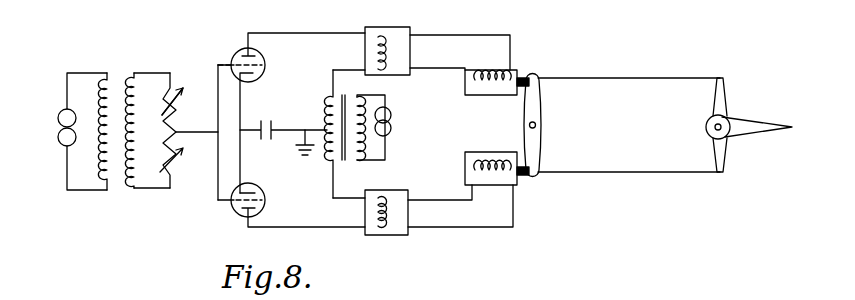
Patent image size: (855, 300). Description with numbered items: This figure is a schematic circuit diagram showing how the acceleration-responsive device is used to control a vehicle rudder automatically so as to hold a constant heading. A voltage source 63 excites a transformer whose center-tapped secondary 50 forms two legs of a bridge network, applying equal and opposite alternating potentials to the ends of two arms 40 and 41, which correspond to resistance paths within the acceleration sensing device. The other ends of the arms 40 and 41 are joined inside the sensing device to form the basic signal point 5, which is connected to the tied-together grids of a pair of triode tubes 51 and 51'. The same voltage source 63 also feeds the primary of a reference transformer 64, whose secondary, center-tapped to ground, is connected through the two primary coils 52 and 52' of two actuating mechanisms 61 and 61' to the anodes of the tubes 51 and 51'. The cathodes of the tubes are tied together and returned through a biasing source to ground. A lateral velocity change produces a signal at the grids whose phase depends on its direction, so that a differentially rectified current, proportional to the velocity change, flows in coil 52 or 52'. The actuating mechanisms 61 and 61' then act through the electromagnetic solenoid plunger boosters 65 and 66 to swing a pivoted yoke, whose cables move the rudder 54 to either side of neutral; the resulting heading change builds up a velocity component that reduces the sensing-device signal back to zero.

The voltage source 63 is at (70, 109).
The transformer secondary 50 is at (144, 97).
The bridge arm 40 is at (175, 82).
The basic signal point 5 is at (182, 104).
The bridge arm 41 is at (173, 166).
The triode tube 51 is at (291, 116).
The triode tube 51' is at (291, 205).
The reference transformer 64 is at (282, 114).
The primary portion (coil) 52 is at (387, 36).
The actuating mechanism 61 is at (399, 41).
The primary portion (coil) 52' is at (382, 227).
The actuating mechanism 61' is at (399, 224).
The booster 66 is at (522, 73).
The booster 65 is at (518, 186).
The rudder 54 is at (765, 132).